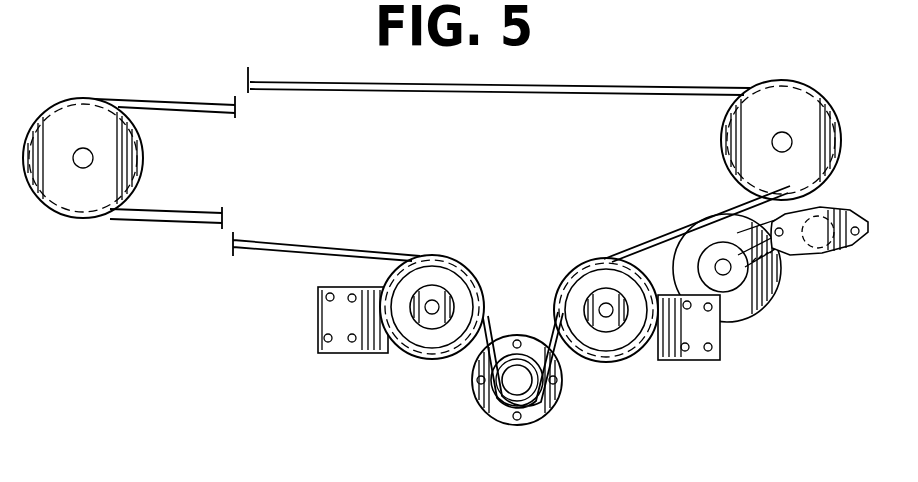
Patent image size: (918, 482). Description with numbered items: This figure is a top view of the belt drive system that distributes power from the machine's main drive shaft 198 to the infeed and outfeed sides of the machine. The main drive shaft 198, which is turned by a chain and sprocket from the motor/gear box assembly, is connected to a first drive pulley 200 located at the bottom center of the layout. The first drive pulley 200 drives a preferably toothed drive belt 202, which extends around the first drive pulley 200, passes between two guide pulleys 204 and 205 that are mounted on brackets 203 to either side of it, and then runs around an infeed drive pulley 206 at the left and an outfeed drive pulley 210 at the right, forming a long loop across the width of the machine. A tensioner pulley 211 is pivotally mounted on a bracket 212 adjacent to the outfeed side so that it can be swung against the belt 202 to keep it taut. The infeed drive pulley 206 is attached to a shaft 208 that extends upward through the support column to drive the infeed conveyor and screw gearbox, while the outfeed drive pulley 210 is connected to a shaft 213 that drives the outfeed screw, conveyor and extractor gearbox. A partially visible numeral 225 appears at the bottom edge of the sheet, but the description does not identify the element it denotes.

The main drive shaft 198 is at (538, 400).
The first drive pulley 200 is at (492, 400).
The drive belt 202 is at (307, 243).
The brackets 203 is at (337, 343).
The guide pulley 204 is at (423, 357).
The guide pulley 205 is at (615, 362).
The infeed drive pulley 206 is at (133, 122).
The shaft 208 is at (92, 163).
The outfeed drive pulley 210 is at (727, 122).
The tensioner pulley 211 is at (762, 305).
The bracket 212 is at (790, 260).
The shaft 213 is at (777, 152).
The frame 225 is at (489, 477).